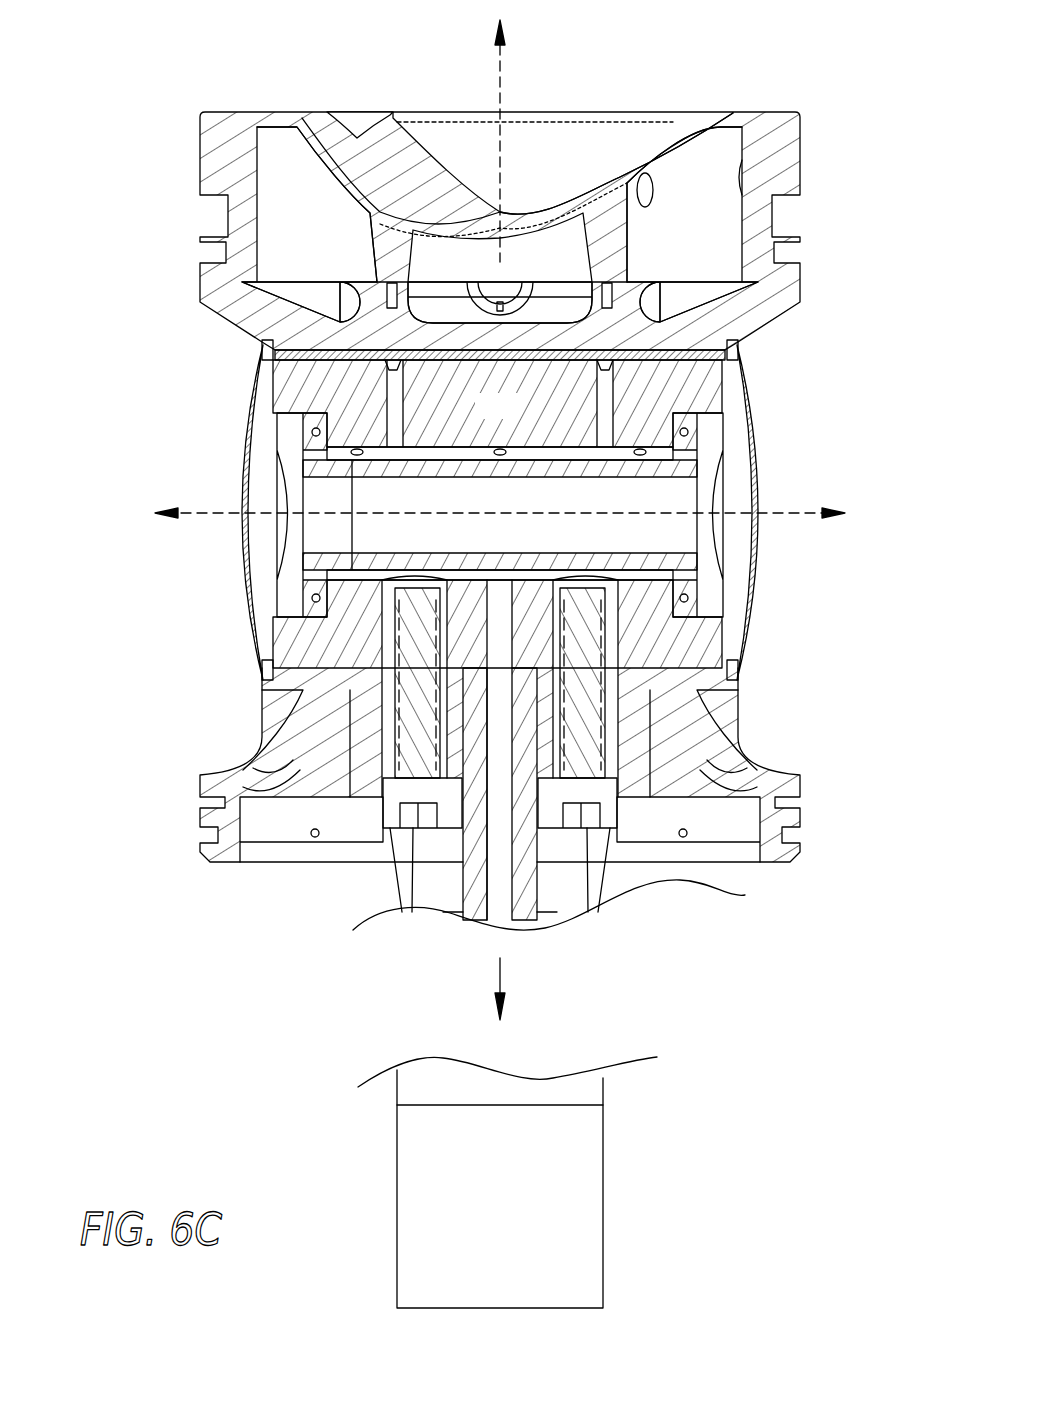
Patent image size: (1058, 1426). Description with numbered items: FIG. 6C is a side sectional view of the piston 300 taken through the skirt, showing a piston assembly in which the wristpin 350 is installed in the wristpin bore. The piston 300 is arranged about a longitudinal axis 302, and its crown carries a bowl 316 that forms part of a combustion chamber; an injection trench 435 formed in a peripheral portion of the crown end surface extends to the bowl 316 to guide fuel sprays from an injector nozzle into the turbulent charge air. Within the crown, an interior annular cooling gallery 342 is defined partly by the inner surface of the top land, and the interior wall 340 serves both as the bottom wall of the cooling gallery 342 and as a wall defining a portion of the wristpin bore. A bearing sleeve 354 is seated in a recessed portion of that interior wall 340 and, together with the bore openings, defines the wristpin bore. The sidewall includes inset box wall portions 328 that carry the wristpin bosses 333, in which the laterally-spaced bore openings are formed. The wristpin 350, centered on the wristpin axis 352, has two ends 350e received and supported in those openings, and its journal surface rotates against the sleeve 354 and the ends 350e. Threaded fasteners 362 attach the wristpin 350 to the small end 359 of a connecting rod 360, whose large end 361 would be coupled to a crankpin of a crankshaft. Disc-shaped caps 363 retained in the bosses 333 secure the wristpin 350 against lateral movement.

The piston 300 is at (140, 142).
The longitudinal axis 302 is at (500, 80).
The bowl 316 is at (620, 133).
The box wall portions 328 is at (262, 707).
The wristpin bosses 333 is at (288, 676).
The interior wall 340 is at (317, 338).
The interior annular cooling gallery 342 is at (273, 140).
The wristpin 350 is at (514, 417).
The wristpin ends 350e is at (293, 390).
The wristpin axis 352 is at (770, 513).
The bearing sleeve 354 is at (703, 348).
The small end of connecting rod 359 is at (473, 750).
The connecting rod 360 is at (553, 918).
The large end of connecting rod 361 is at (602, 1163).
The threaded fasteners 362 is at (407, 745).
The disc-shaped caps 363 is at (240, 439).
The injection trenches 435 is at (352, 92).